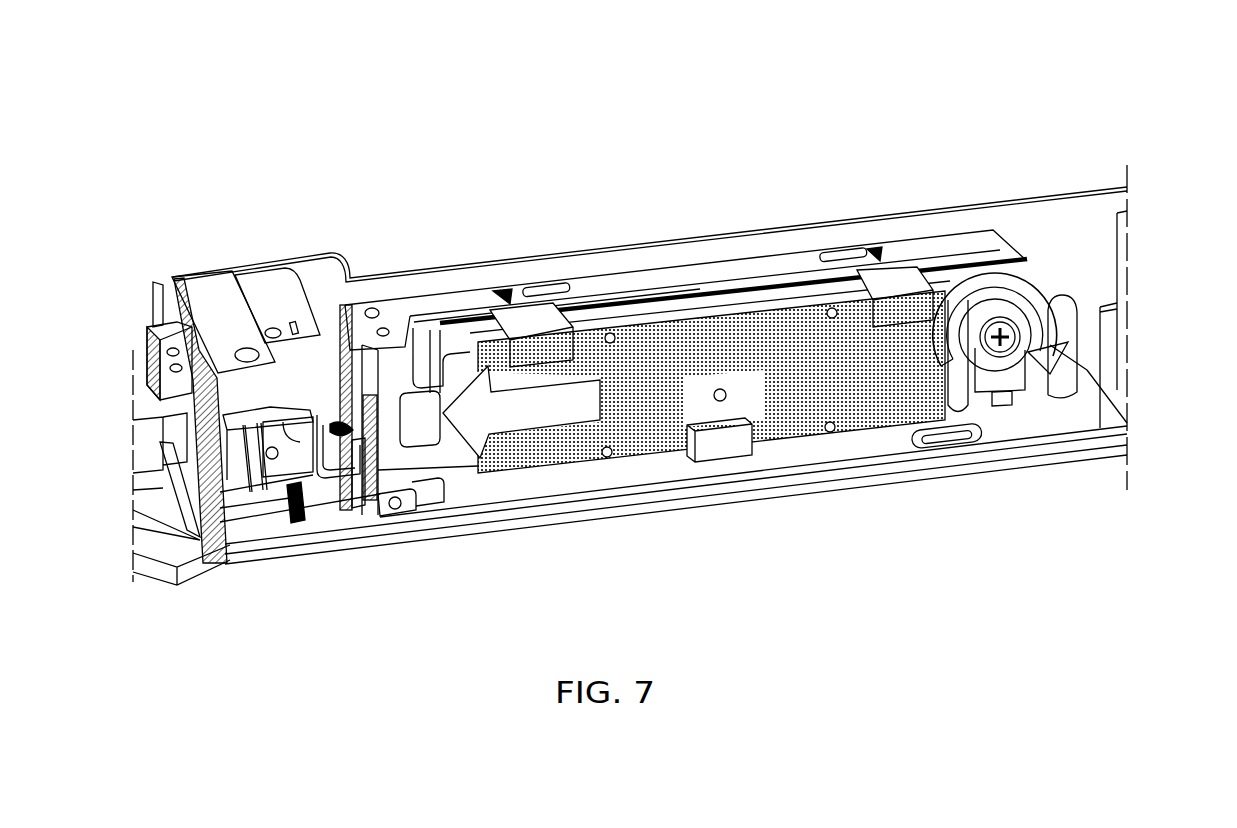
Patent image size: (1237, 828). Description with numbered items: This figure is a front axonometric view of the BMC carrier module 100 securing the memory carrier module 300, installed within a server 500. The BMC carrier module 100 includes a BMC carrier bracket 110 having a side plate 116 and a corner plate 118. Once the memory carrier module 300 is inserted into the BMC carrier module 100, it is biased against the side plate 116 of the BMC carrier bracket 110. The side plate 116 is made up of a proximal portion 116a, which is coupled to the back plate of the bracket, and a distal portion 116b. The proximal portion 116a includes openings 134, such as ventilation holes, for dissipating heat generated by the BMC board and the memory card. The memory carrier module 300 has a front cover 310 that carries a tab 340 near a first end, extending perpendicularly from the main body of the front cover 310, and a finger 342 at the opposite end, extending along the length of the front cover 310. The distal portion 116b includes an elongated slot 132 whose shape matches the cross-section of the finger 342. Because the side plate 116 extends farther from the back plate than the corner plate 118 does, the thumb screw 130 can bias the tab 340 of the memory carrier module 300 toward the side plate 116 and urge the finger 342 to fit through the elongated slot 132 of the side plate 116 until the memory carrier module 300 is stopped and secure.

The server 500 is at (1105, 84).
The BMC carrier module 100 is at (612, 278).
The BMC carrier bracket 110 is at (660, 278).
The memory carrier module 300 is at (718, 290).
The front cover 310 is at (803, 447).
The finger 342 is at (432, 415).
The corner plate 118 is at (1043, 370).
The thumb screw 130 is at (1040, 325).
The tab 340 is at (977, 405).
The openings 134 is at (326, 368).
The proximal portion 116a is at (325, 322).
The side plate 116 is at (353, 449).
The distal portion 116b is at (365, 518).
The elongated slot 132 is at (297, 525).